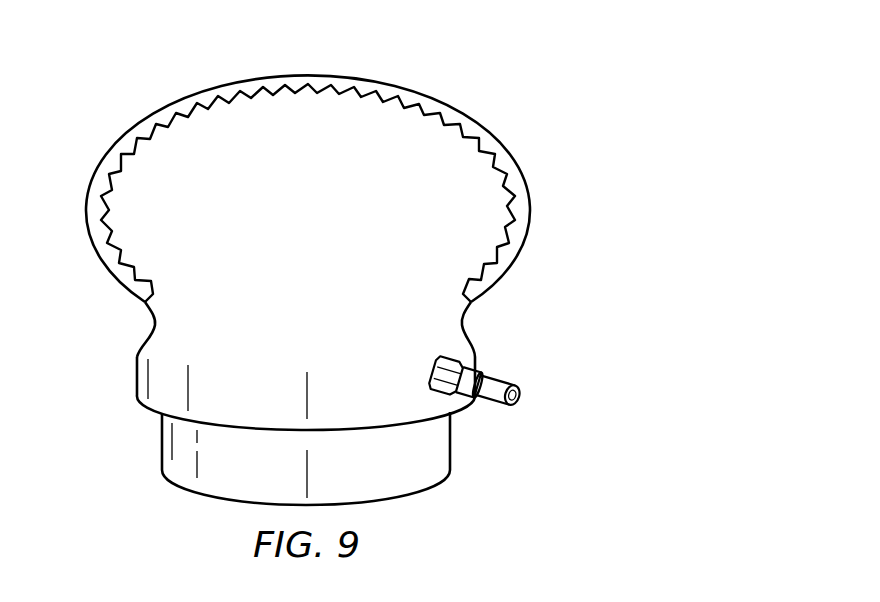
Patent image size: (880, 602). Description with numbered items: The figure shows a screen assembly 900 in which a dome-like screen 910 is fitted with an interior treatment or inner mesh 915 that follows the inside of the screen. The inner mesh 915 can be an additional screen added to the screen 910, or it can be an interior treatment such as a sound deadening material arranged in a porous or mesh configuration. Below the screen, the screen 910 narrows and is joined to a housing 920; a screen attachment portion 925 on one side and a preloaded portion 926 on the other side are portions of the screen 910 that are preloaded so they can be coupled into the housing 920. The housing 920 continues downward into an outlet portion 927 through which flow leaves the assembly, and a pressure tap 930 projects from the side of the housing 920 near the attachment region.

The screen assembly 900 is at (494, 92).
The screen 910 is at (326, 214).
The interior treatment or inner mesh 915 is at (152, 130).
The housing 920 is at (287, 421).
The screen attachment portion 925 is at (464, 325).
The preloaded portion 926 is at (152, 320).
The outlet portion 927 is at (405, 486).
The pressure tap 930 is at (503, 404).